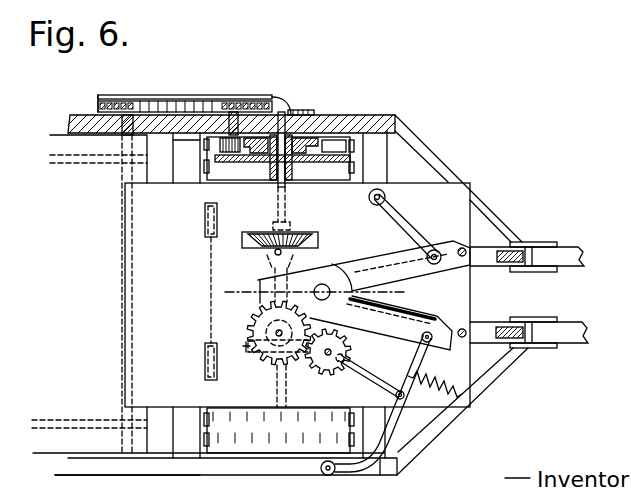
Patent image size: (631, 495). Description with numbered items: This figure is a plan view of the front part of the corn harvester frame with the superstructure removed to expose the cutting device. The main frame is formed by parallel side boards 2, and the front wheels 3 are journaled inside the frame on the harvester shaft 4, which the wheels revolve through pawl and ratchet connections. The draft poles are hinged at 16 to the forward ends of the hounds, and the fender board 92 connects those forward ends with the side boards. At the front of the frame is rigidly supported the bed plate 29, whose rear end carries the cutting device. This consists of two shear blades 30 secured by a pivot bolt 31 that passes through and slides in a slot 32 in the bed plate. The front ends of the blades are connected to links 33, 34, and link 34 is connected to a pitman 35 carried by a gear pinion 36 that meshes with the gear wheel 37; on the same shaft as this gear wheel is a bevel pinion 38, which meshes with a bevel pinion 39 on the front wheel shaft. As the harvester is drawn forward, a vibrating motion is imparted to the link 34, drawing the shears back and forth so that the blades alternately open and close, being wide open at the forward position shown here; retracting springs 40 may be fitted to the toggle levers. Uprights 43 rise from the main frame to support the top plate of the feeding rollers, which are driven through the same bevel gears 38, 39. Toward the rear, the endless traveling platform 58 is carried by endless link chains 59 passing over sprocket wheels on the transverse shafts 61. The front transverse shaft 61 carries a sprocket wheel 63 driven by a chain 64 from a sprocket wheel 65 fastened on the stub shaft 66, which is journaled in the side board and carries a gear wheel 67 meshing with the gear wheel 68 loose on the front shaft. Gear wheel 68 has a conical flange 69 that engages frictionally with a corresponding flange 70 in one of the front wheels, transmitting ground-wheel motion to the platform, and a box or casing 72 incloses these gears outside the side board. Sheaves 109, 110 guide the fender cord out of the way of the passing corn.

The side board 2 is at (380, 115).
The front wheel 3 is at (358, 152).
The harvester shaft 4 is at (290, 112).
The hinge 16 is at (545, 273).
The bed plate 29 is at (457, 187).
The shear blade 30 is at (400, 250).
The pivot bolt 31 is at (328, 277).
The slot 32 is at (262, 283).
The link 33 is at (405, 220).
The link 34 is at (395, 423).
The pitman 35 is at (380, 385).
The gear pinion 36 is at (322, 372).
The gear wheel 37 is at (275, 365).
The bevel pinion 38 is at (250, 325).
The bevel pinion 39 is at (253, 353).
The retracting spring 40 is at (435, 379).
The upright 43 is at (515, 248).
The endless traveling platform 58 is at (122, 467).
The endless link chain 59 is at (105, 165).
The transverse shaft 61 is at (103, 123).
The sprocket wheel 63 is at (133, 100).
The chain 64 is at (170, 101).
The sprocket wheel 65 is at (258, 100).
The stub shaft 66 is at (233, 114).
The gear wheel 67 is at (186, 155).
The gear wheel 68 is at (320, 138).
The conical flange 69 is at (307, 163).
The flange 70 is at (240, 165).
The box or casing 72 is at (115, 98).
The fender board 92 is at (433, 156).
The sheave 109 is at (205, 222).
The sheave 110 is at (205, 367).